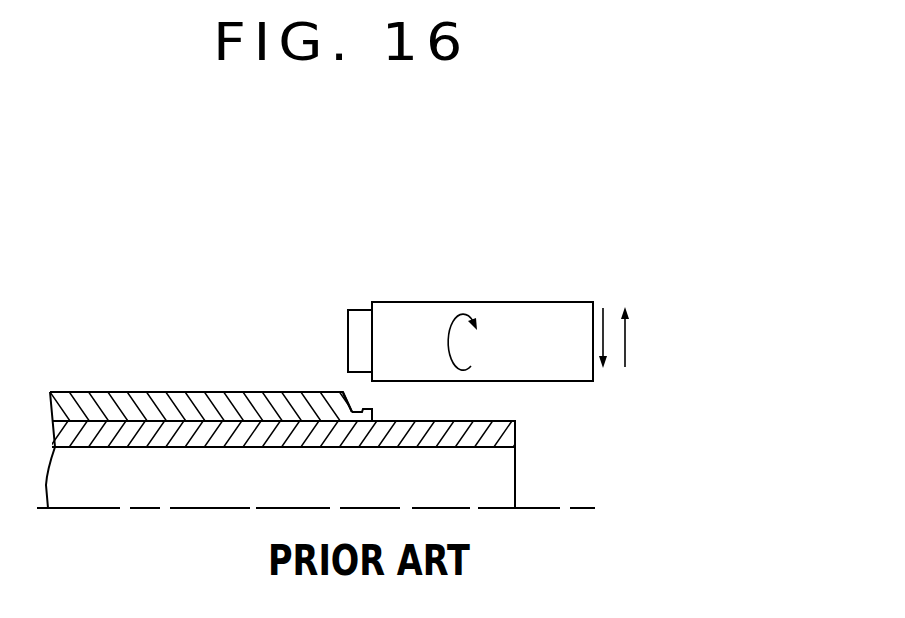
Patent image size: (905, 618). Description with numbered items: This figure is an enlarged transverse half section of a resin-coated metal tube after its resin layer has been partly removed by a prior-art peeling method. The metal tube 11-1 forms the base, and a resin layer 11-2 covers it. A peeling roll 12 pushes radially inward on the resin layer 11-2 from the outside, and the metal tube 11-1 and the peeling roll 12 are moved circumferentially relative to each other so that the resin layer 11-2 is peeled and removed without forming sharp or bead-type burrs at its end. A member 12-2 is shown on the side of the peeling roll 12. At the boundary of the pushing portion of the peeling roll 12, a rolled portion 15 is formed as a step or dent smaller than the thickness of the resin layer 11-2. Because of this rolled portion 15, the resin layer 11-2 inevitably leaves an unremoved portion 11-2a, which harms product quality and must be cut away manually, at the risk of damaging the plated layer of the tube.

The metal tube 11-1 is at (515, 433).
The resin layer 11-2 is at (90, 392).
The unremoved portion 11-2a is at (374, 413).
The peeling roll 12 is at (524, 292).
The head side member 12-2 is at (350, 314).
The rolled portion 15 is at (352, 394).